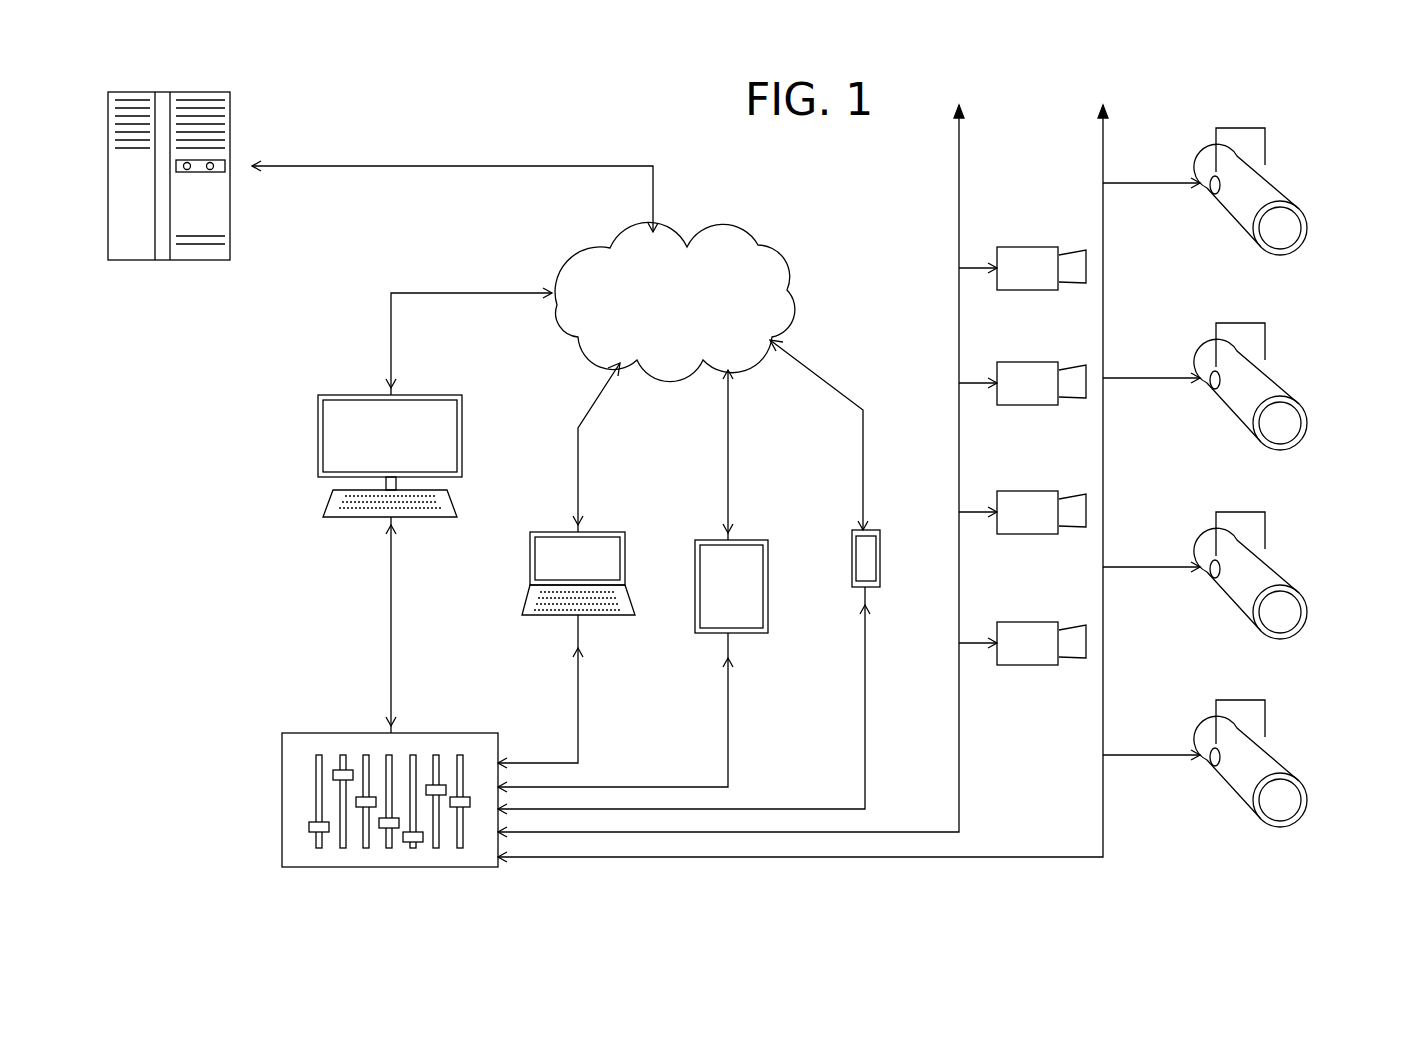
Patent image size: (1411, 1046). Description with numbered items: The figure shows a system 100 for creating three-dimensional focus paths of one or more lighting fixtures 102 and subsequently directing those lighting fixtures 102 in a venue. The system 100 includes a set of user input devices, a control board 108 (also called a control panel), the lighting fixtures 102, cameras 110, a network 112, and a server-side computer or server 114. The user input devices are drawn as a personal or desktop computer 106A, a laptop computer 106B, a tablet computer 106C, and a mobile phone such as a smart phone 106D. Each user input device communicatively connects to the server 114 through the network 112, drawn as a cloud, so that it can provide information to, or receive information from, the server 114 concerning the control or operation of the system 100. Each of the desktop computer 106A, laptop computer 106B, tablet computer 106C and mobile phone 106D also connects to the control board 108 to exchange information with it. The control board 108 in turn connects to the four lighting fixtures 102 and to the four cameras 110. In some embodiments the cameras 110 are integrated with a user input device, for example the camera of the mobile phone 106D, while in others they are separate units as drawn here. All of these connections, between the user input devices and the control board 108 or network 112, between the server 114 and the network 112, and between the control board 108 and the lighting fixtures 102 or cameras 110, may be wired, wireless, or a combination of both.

The system 100 is at (406, 114).
The lighting fixture 102 is at (1285, 193).
The desktop computer 106A is at (318, 430).
The laptop computer 106B is at (600, 532).
The tablet computer 106C is at (755, 540).
The mobile phone 106D is at (878, 560).
The control board 108 is at (282, 797).
The camera 110 is at (1010, 247).
The network 112 is at (760, 246).
The server 114 is at (170, 260).